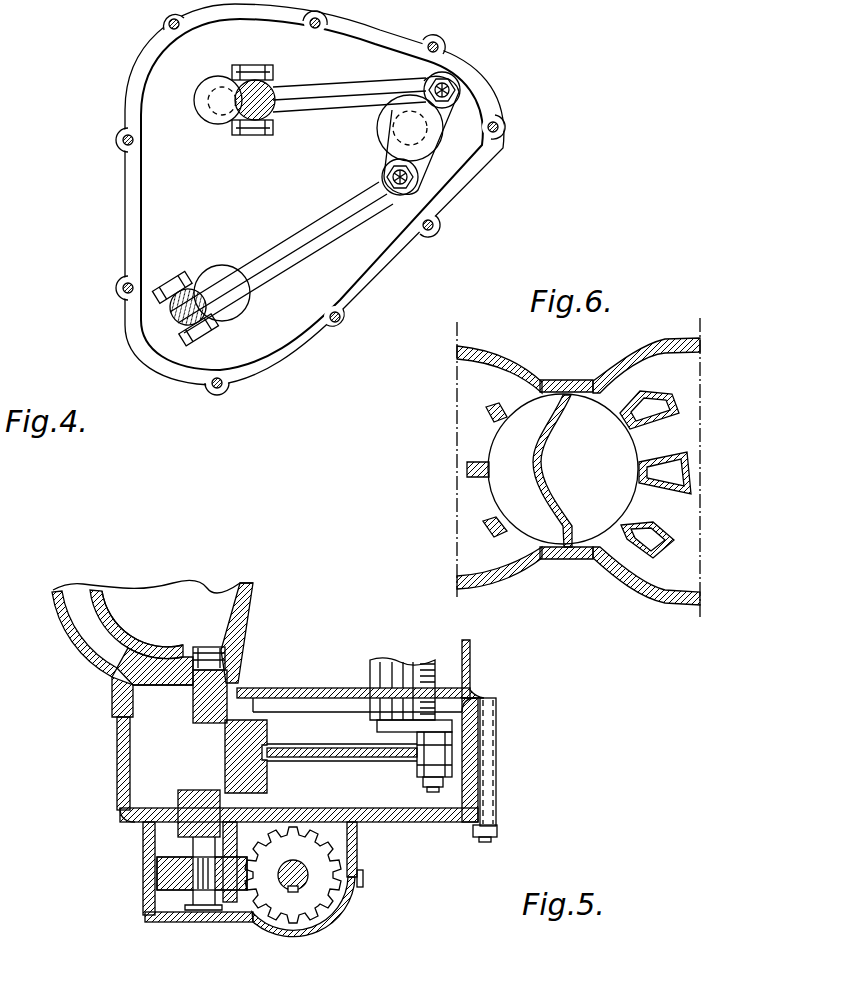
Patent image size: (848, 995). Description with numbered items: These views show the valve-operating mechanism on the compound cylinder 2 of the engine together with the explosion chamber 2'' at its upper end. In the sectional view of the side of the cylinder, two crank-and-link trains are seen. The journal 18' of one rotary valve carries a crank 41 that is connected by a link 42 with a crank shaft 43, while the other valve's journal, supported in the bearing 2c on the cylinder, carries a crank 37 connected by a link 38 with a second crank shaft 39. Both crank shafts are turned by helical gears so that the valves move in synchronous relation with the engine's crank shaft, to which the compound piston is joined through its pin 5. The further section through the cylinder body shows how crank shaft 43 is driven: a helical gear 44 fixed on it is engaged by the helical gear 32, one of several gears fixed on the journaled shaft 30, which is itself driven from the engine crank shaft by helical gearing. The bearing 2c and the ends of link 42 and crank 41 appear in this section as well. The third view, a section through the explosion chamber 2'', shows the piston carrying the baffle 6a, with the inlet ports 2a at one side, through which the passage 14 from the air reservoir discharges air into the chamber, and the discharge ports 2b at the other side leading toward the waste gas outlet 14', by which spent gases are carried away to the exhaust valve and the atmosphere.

In FIG. 4, the pin 5 is at (176, 100).
In FIG. 4, the link 42 is at (335, 78).
In FIG. 5, the link 42 is at (313, 758).
In FIG. 4, the crank shaft 43 is at (235, 118).
In FIG. 5, the crank shaft 43 is at (212, 715).
In FIG. 4, the bearing 2c is at (378, 137).
In FIG. 5, the bearing 2c is at (382, 690).
In FIG. 4, the crank 41 is at (392, 127).
In FIG. 5, the crank 41 is at (433, 762).
In FIG. 4, the journal 18' is at (486, 97).
In FIG. 4, the crank 37 is at (418, 165).
In FIG. 4, the link 38 is at (312, 245).
In FIG. 4, the crank shaft 39 is at (202, 275).
In FIG. 6, the passage 14 is at (488, 471).
In FIG. 6, the waste gas outlet 14' is at (653, 507).
In FIG. 6, the baffle 6a is at (541, 455).
In FIG. 6, the inlet ports 2a is at (483, 499).
In FIG. 6, the discharge ports 2b is at (668, 433).
In FIG. 5, the compound cylinder 2 is at (167, 624).
In FIG. 5, the upper chamber 2'' is at (191, 619).
In FIG. 5, the helical gear 32 is at (280, 932).
In FIG. 5, the journaled shaft 30 is at (306, 870).
In FIG. 5, the helical gear 44 is at (165, 860).